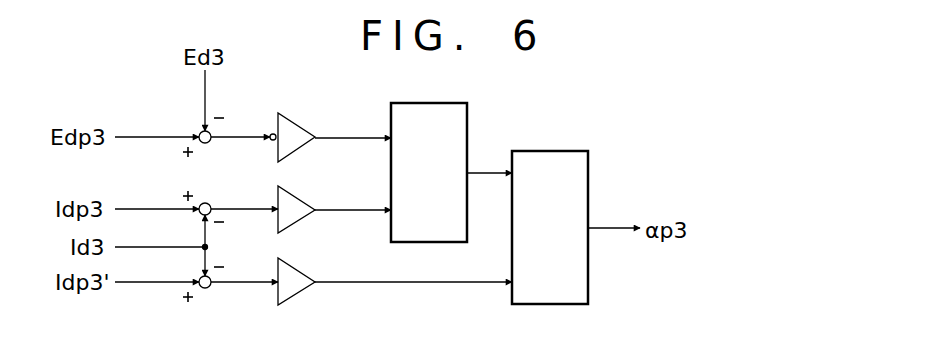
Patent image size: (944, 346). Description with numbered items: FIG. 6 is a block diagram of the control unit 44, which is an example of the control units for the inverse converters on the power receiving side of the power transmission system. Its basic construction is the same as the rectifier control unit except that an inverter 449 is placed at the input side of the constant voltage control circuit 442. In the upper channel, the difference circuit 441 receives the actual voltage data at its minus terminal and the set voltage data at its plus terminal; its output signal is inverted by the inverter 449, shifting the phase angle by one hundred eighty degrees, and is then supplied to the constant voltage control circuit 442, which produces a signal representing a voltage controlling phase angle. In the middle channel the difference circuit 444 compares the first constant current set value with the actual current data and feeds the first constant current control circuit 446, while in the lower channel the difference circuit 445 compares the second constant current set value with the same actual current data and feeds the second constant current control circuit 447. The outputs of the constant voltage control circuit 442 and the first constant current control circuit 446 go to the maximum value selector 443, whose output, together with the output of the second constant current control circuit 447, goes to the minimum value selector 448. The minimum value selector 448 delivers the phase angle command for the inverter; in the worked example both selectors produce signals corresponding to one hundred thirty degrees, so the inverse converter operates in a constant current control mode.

The control unit 44 is at (331, 105).
The difference circuit 441 is at (210, 142).
The constant voltage control circuit 442 is at (298, 146).
The maximum value selector 443 is at (461, 124).
The difference circuit 444 is at (210, 204).
The difference circuit 445 is at (207, 288).
The first constant current control circuit 446 is at (298, 218).
The second constant current control circuit 447 is at (298, 290).
The minimum value selector 448 is at (580, 178).
The inverter 449 is at (271, 133).